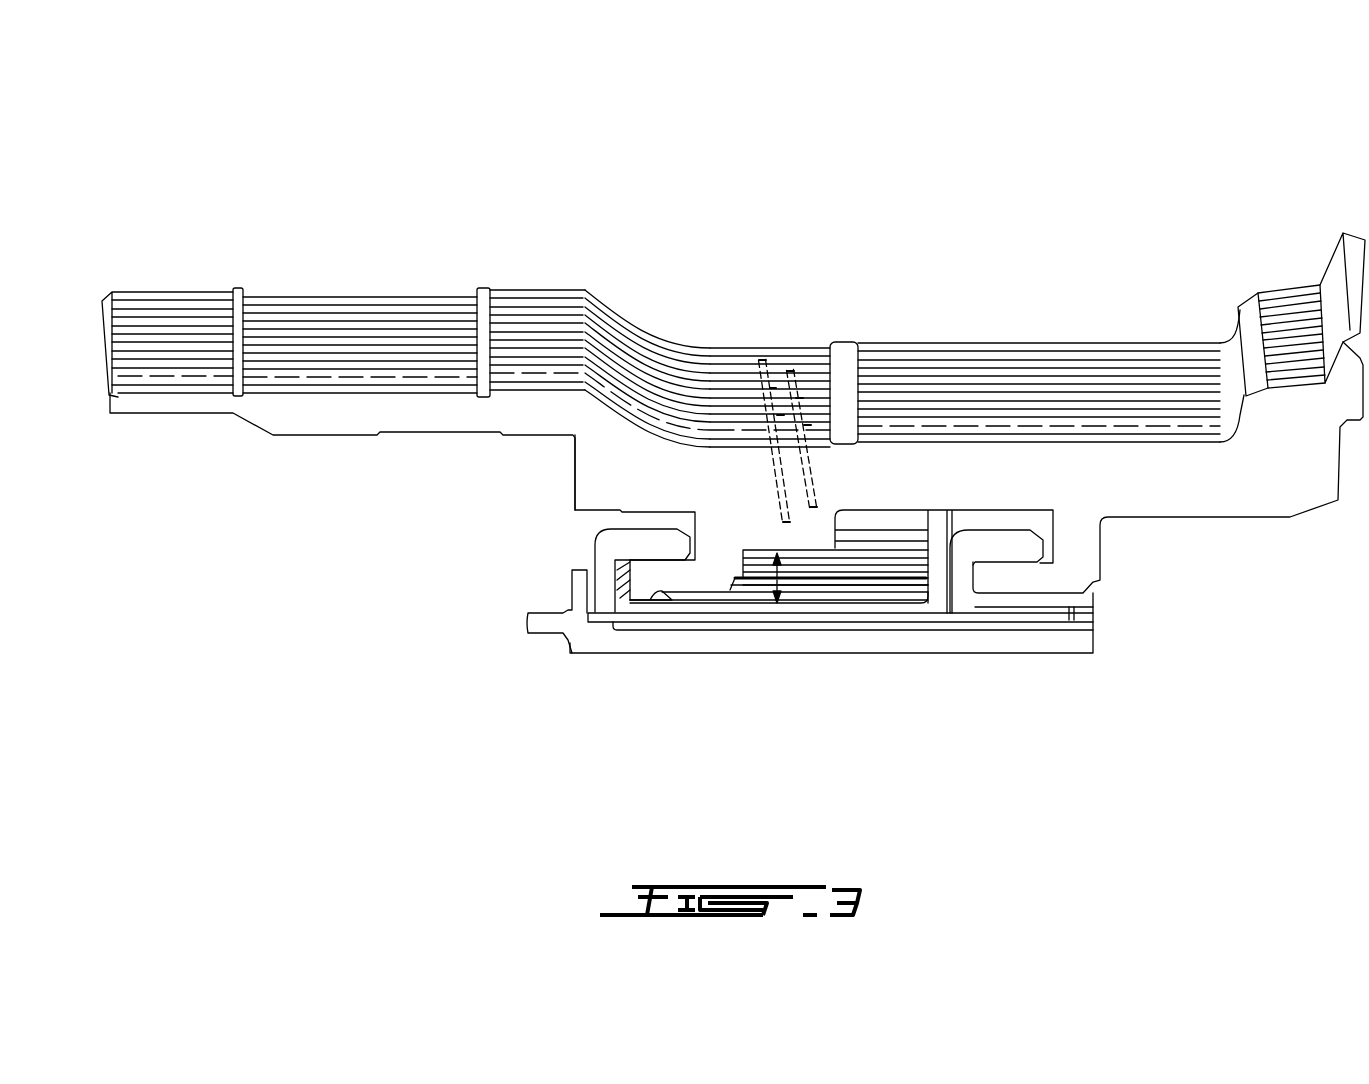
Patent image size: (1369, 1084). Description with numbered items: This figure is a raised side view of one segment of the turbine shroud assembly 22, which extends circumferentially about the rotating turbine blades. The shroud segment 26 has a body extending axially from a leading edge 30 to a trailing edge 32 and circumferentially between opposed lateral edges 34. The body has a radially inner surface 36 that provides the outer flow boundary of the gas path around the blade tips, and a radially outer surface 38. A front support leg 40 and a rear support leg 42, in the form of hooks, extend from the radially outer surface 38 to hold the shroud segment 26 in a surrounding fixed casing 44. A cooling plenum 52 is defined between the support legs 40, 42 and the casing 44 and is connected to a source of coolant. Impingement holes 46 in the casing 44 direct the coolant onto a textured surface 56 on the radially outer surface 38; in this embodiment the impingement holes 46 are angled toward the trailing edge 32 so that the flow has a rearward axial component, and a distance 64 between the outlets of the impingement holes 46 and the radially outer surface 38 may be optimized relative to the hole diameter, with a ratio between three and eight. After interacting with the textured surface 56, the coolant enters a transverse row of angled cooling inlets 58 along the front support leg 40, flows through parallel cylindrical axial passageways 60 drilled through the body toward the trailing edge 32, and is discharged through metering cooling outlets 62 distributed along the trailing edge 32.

The turbine shroud assembly 22 is at (110, 172).
The shroud segment 26 is at (490, 577).
The leading edge 30 is at (510, 628).
The trailing edge 32 is at (1112, 659).
The lateral edges 34 is at (690, 640).
The radially inner surface 36 is at (987, 655).
The radially outer surface 38 is at (892, 607).
The front support leg 40 is at (625, 542).
The rear support leg 42 is at (1012, 550).
The casing 44 is at (1135, 380).
The impingement holes 46 is at (779, 366).
The cooling plenum 52 is at (868, 515).
The textured surface 56 is at (885, 549).
The cooling inlets 58 is at (652, 598).
The axial passageways 60 is at (822, 592).
The cooling outlets 62 is at (1090, 605).
The distance 64 is at (797, 590).